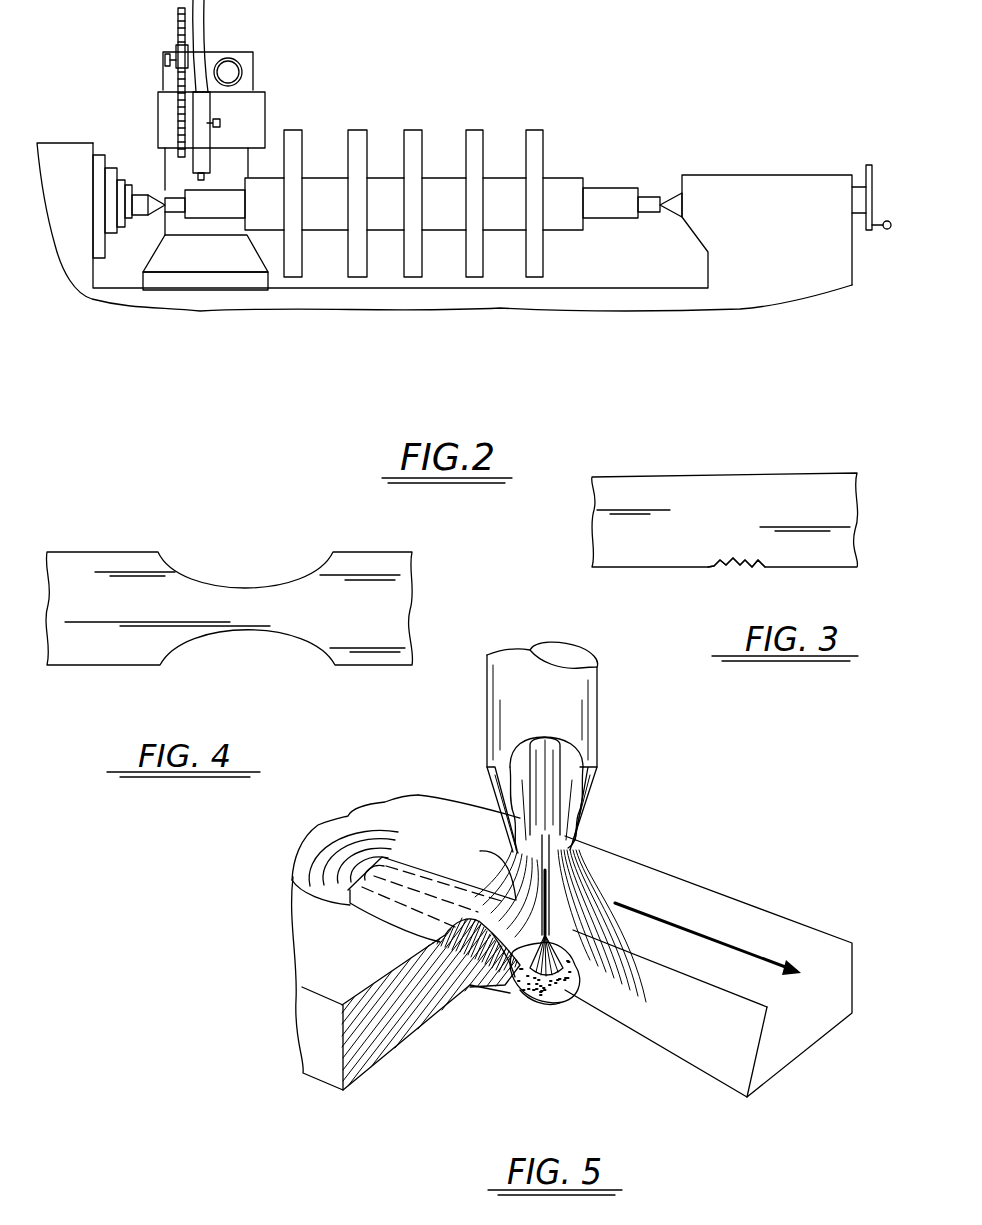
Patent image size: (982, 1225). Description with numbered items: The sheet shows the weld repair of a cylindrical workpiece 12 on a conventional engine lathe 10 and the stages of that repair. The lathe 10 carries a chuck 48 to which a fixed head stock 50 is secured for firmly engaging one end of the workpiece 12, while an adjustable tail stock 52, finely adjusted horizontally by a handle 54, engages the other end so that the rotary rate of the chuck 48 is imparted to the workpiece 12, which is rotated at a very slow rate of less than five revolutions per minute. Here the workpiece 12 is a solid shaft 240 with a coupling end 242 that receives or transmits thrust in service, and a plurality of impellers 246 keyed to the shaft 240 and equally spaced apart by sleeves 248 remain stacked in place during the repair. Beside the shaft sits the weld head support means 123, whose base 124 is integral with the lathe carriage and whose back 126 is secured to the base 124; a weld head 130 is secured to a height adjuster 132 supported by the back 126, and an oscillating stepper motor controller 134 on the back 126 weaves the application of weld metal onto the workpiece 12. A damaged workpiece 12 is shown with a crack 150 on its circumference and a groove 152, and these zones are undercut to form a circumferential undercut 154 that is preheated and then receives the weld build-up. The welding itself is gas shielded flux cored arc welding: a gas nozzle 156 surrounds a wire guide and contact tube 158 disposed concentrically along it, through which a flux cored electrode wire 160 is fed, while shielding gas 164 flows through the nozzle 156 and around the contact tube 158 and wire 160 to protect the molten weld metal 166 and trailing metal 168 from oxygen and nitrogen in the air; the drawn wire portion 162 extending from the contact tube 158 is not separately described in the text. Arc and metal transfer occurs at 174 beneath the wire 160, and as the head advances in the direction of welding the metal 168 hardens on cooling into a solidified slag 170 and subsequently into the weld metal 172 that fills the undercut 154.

In FIG. 2, the engine lathe 10 is at (48, 118).
In FIG. 2, the cylindrical workpiece 12 is at (385, 195).
In FIG. 3, the cylindrical workpiece 12 is at (725, 490).
In FIG. 4, the cylindrical workpiece 12 is at (229, 651).
In FIG. 5, the cylindrical workpiece 12 is at (572, 961).
In FIG. 2, the chuck 48 is at (103, 156).
In FIG. 2, the fixed head stock 50 is at (140, 213).
In FIG. 2, the adjustable tail stock 52 is at (672, 205).
In FIG. 2, the handle 54 is at (868, 168).
In FIG. 2, the weld head support means 123 is at (253, 117).
In FIG. 2, the base 124 is at (207, 253).
In FIG. 2, the back 126 is at (238, 165).
In FIG. 2, the weld head 130 is at (185, 170).
In FIG. 2, the height adjuster 132 is at (177, 26).
In FIG. 2, the oscillating stepper motor controller 134 is at (246, 70).
In FIG. 2, the shaft 240 is at (212, 198).
In FIG. 2, the coupling end 242 is at (175, 205).
In FIG. 2, the impellers 246 is at (292, 268).
In FIG. 2, the sleeves 248 is at (335, 212).
In FIG. 3, the crack 150 is at (715, 493).
In FIG. 3, the groove 152 is at (742, 565).
In FIG. 4, the undercut 154 is at (216, 586).
In FIG. 5, the undercut 154 is at (730, 1035).
In FIG. 5, the gas nozzle 156 is at (597, 672).
In FIG. 5, the wire guide and contact tube 158 is at (565, 763).
In FIG. 5, the flux cored electrode wire 160 is at (565, 905).
In FIG. 5, the welding wire 162 is at (560, 920).
In FIG. 5, the shielding gas 164 is at (505, 870).
In FIG. 5, the molten weld metal 166 is at (557, 1000).
In FIG. 5, the trailing metal 168 is at (518, 993).
In FIG. 5, the solidified slag 170 is at (387, 873).
In FIG. 5, the weld metal 172 is at (470, 997).
In FIG. 5, the arc and metal transfer location 174 is at (558, 998).